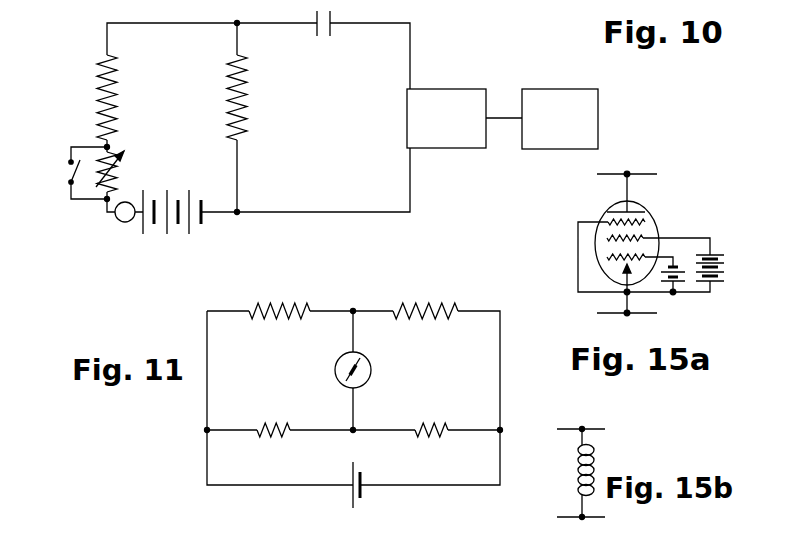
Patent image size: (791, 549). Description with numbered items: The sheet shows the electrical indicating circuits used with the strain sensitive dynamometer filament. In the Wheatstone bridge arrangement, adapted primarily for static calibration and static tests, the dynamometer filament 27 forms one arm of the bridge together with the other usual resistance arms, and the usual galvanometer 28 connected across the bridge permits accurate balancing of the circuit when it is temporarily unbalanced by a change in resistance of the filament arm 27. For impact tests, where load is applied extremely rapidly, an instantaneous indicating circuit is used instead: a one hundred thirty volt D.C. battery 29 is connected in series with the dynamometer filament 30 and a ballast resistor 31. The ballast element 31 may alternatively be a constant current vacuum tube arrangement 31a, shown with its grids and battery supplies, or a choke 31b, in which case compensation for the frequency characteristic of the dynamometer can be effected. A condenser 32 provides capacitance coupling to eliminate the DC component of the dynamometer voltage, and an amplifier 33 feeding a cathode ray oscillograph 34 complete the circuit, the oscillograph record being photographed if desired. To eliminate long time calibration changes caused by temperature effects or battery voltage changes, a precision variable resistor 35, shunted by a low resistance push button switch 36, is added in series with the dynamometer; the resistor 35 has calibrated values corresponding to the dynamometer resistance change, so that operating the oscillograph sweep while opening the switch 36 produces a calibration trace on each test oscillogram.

In FIG. 11, the dynamometer filament 27 is at (285, 304).
In FIG. 11, the galvanometer 28 is at (335, 369).
In FIG. 10, the battery 29 is at (167, 228).
In FIG. 10, the dynamometer filament 30 is at (118, 90).
In FIG. 10, the ballast resistor 31 is at (250, 92).
In FIG. 15A, the constant current vacuum tube arrangement 31a is at (655, 204).
In FIG. 15B, the choke 31b is at (574, 468).
In FIG. 10, the condenser 32 is at (333, 30).
In FIG. 10, the amplifier 33 is at (427, 94).
In FIG. 10, the cathode ray oscillograph 34 is at (582, 90).
In FIG. 10, the precision variable resistor 35 is at (112, 183).
In FIG. 10, the push button switch 36 is at (71, 172).